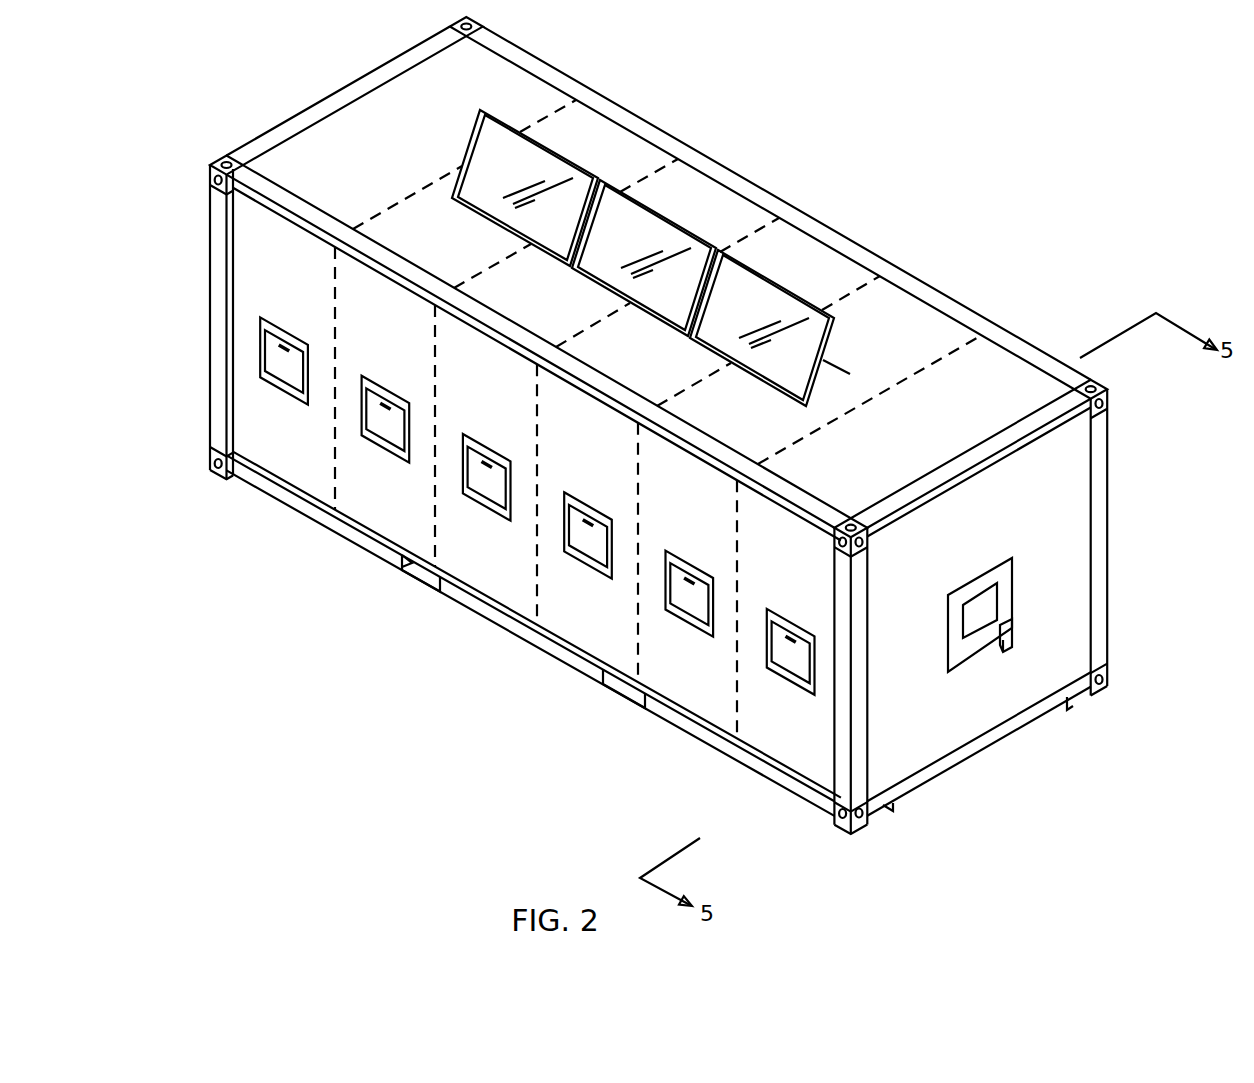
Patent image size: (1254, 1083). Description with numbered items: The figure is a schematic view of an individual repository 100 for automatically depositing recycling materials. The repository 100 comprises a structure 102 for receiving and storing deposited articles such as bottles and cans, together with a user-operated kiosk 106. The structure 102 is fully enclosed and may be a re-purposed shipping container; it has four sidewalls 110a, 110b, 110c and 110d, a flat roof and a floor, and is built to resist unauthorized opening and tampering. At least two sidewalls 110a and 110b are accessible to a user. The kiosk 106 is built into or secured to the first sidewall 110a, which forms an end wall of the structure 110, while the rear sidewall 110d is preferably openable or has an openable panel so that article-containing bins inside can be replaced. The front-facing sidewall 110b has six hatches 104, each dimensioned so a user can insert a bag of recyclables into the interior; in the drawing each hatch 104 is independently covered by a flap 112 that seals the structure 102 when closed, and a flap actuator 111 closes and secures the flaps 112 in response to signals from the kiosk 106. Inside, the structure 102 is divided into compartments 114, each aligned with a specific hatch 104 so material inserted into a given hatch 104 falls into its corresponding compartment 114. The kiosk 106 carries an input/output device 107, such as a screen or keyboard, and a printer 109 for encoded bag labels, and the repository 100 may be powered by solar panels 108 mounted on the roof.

The repository 100 is at (888, 95).
The structure 102 is at (797, 193).
The hatch 104 is at (258, 338).
The kiosk 106 is at (1013, 573).
The Input/Output device 107 is at (998, 605).
The solar panels 108 is at (573, 160).
The printer 109 is at (1010, 623).
The structure 110 is at (826, 822).
The first sidewall 110a is at (948, 730).
The front-facing sidewall 110b is at (405, 540).
The sidewall 110c is at (238, 132).
The rear sidewall 110d is at (935, 272).
The flap actuator 111 is at (1010, 652).
The flap 112 is at (265, 365).
The compartment 114 is at (302, 252).